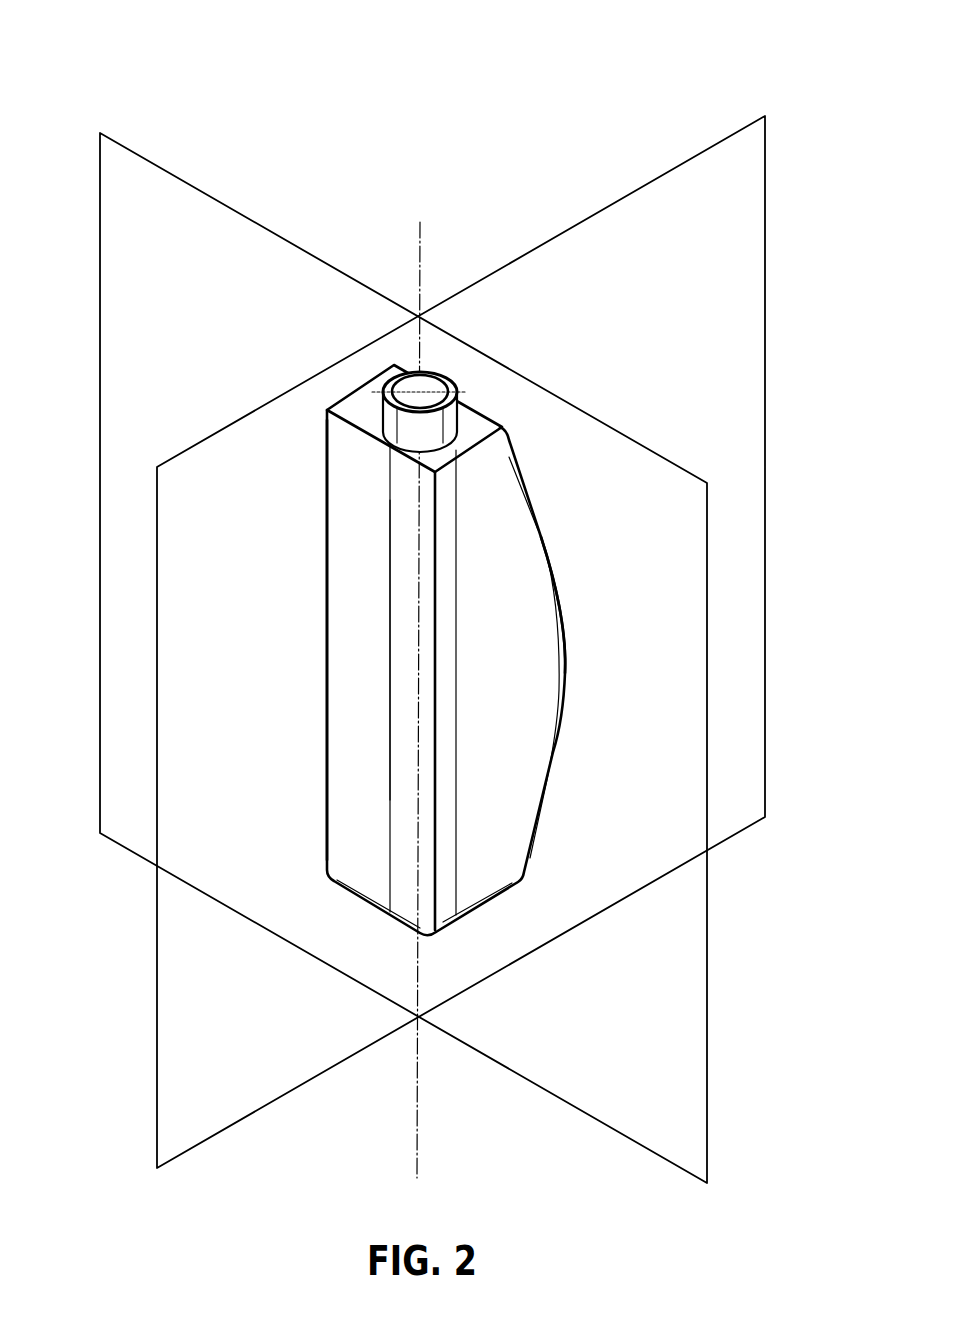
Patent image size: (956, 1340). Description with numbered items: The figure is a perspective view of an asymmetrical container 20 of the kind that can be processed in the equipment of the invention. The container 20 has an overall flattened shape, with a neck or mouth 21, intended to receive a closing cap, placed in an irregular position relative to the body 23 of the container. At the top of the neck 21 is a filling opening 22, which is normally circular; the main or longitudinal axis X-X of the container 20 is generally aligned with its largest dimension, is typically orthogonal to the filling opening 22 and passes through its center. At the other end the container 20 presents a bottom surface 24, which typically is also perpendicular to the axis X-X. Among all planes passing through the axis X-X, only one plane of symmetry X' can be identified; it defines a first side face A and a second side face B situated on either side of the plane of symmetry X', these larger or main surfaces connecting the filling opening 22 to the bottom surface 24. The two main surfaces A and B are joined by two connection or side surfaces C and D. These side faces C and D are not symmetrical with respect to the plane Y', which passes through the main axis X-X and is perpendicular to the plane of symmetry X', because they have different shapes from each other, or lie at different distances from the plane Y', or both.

The container 20 is at (478, 173).
The neck 21 is at (435, 419).
The filling opening 22 is at (412, 385).
The body 23 is at (377, 792).
The bottom surface 24 is at (473, 880).
The first side face A is at (325, 452).
The second side face B is at (502, 658).
The connection surface C is at (370, 643).
The connection surface D is at (533, 500).
The main axis X is at (405, 692).
The plane of symmetry X' is at (461, 612).
The plane Y' is at (391, 601).